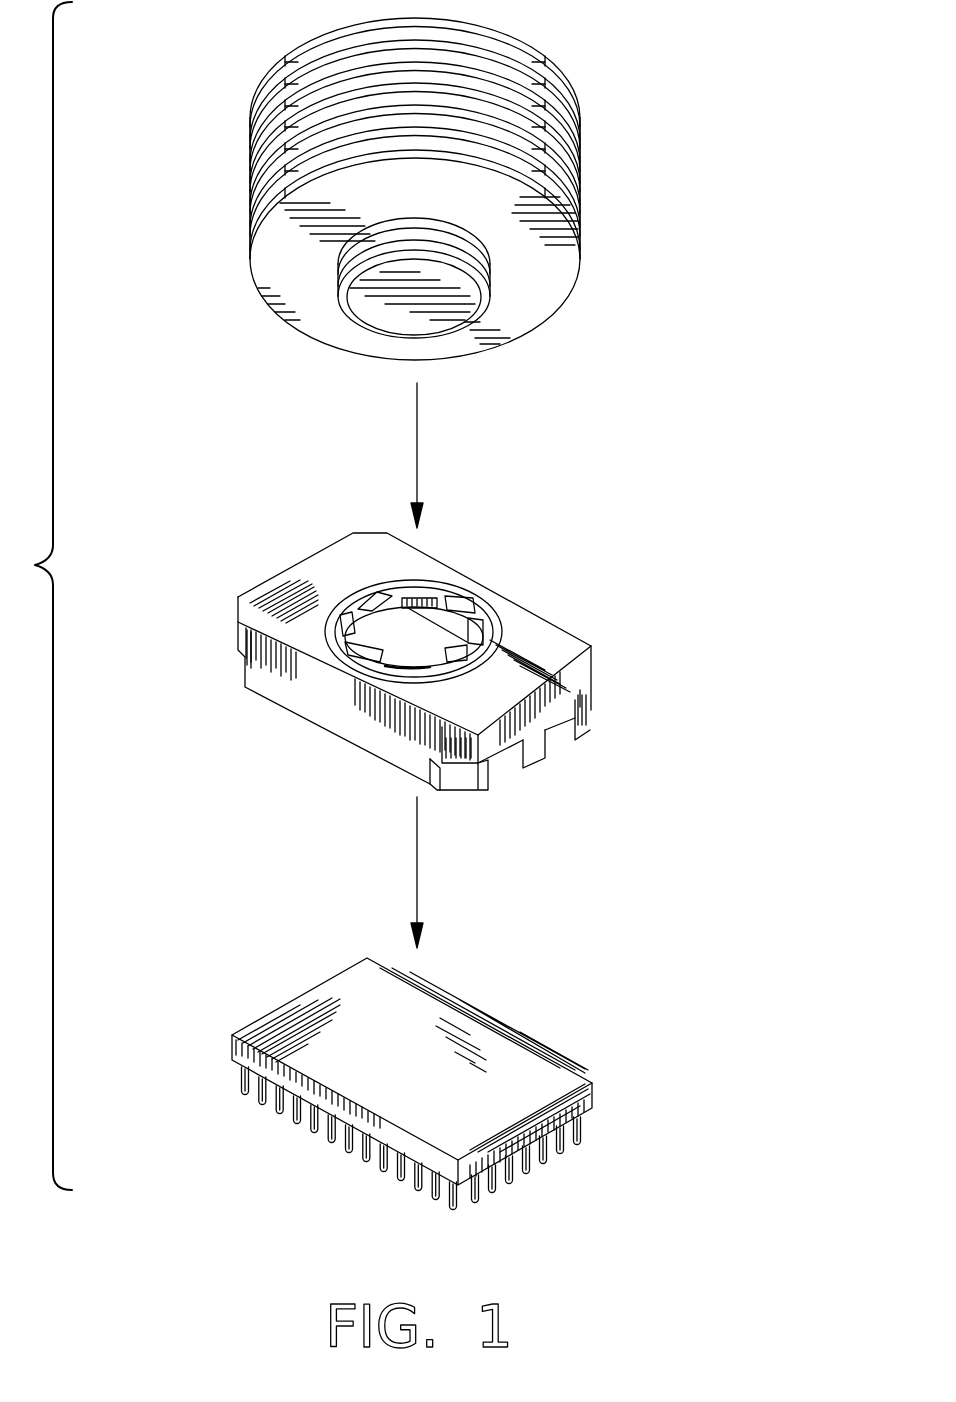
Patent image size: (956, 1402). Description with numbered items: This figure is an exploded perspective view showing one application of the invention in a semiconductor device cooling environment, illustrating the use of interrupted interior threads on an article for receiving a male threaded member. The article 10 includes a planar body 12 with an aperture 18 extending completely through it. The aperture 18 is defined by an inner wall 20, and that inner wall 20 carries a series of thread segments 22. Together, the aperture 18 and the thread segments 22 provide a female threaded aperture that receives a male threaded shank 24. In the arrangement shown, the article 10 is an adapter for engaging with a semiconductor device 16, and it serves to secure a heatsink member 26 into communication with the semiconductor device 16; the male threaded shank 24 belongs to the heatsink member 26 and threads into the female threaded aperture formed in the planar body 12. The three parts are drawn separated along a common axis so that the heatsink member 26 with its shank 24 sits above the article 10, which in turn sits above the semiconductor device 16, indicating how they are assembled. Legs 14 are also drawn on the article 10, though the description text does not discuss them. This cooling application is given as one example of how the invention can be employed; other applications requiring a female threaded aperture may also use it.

The article 10 is at (478, 663).
The planar body 12 is at (540, 643).
The legs 14 is at (352, 722).
The semiconductor device 16 is at (507, 1068).
The aperture 18 is at (418, 640).
The inner wall 20 is at (433, 593).
The thread segments 22 is at (416, 598).
The male threaded shank 24 is at (492, 278).
The heatsink member 26 is at (451, 189).